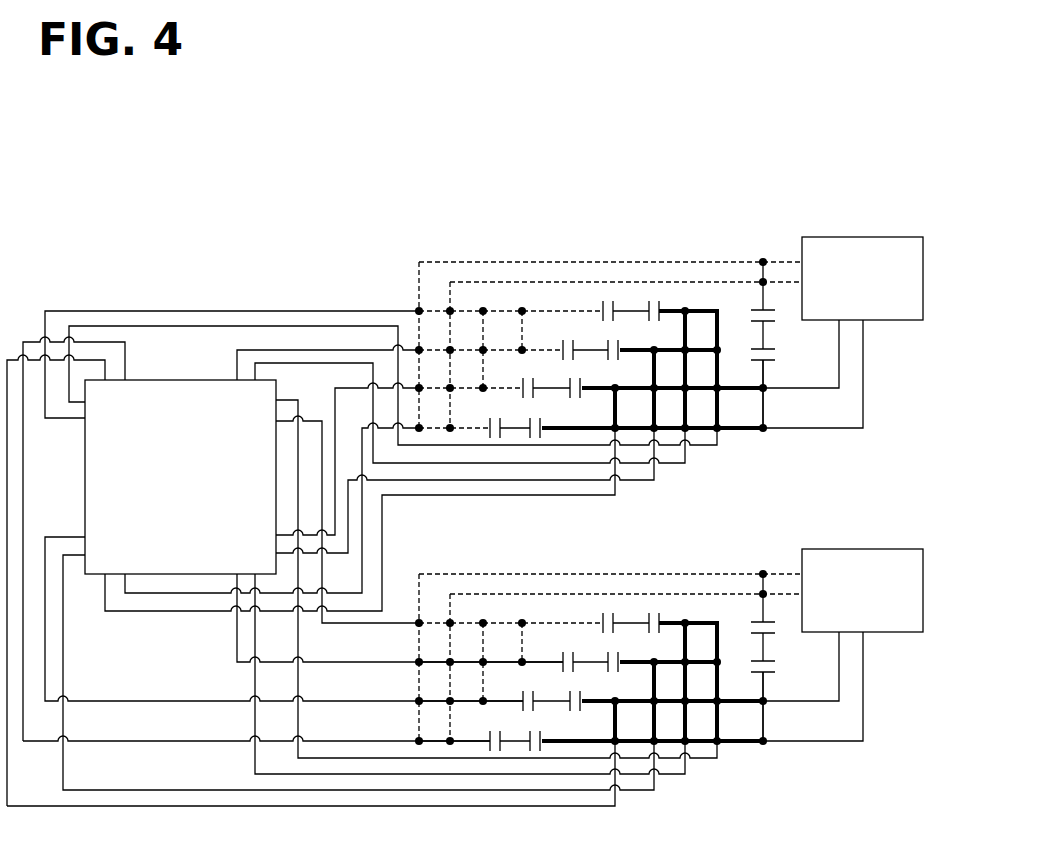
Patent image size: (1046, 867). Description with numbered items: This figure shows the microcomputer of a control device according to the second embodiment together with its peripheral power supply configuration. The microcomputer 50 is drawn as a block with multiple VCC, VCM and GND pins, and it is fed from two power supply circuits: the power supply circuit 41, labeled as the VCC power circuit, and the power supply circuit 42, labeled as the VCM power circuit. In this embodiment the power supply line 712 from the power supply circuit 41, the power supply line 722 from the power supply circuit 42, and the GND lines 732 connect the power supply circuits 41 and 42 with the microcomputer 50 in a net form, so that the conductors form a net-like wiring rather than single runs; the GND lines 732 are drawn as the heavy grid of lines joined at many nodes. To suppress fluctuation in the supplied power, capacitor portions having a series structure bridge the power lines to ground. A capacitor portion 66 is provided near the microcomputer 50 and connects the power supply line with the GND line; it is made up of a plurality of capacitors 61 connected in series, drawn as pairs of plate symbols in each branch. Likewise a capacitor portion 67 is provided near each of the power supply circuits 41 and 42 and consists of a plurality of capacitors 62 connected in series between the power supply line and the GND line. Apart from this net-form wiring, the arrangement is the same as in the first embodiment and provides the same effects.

The microcomputer 50 is at (183, 380).
The power supply circuit 42 is at (904, 237).
The power supply circuit 41 is at (904, 549).
The power supply line 722 is at (462, 262).
The power supply line 712 is at (462, 574).
The capacitor portion 66 is at (593, 296).
The capacitor 61 is at (613, 301).
The capacitor 62 is at (776, 322).
The capacitor portion 67 is at (773, 370).
The GND line 732 is at (733, 433).